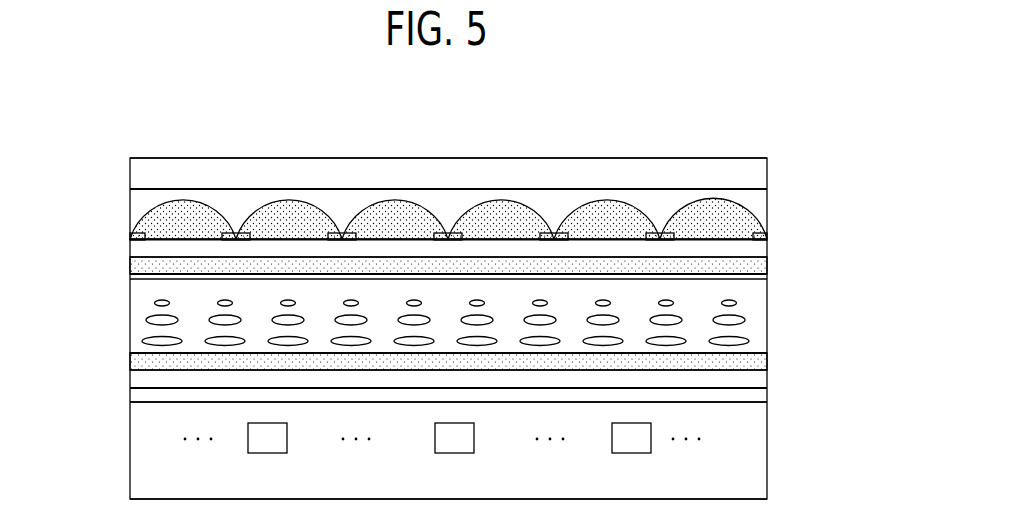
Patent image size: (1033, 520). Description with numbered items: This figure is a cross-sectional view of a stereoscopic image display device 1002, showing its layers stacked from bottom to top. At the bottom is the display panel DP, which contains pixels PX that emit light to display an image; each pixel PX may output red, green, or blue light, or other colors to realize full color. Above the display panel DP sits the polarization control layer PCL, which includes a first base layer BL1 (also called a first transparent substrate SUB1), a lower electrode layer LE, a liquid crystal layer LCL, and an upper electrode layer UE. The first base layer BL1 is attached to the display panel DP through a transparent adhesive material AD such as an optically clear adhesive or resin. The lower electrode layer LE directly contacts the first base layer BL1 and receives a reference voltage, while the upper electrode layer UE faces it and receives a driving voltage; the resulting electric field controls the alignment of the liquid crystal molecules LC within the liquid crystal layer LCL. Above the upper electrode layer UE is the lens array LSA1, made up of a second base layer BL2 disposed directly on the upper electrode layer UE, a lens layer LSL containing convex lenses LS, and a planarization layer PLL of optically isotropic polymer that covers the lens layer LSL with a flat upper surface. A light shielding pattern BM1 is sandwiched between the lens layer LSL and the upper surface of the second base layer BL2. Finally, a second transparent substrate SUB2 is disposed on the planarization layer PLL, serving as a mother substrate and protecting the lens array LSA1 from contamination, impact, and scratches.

The stereoscopic image display device 1002 is at (515, 127).
The second transparent substrate SUB2 is at (768, 178).
The lens array LSA1 is at (84, 190).
The planarization layer PLL is at (130, 197).
The lens LS is at (208, 205).
The lens layer LSL is at (136, 222).
The light shielding pattern BM1 is at (236, 241).
The second base layer BL2 is at (135, 248).
The upper electrode layer UE is at (768, 270).
The polarization control layer PCL is at (831, 257).
The liquid crystal layer LCL is at (454, 323).
The liquid crystal molecules LC is at (146, 320).
The lower electrode layer LE is at (768, 362).
The first base layer BL1 is at (768, 386).
The first transparent substrate SUB1 is at (482, 401).
The transparent adhesive material AD is at (138, 395).
The display panel DP is at (469, 450).
The pixel PX is at (449, 438).